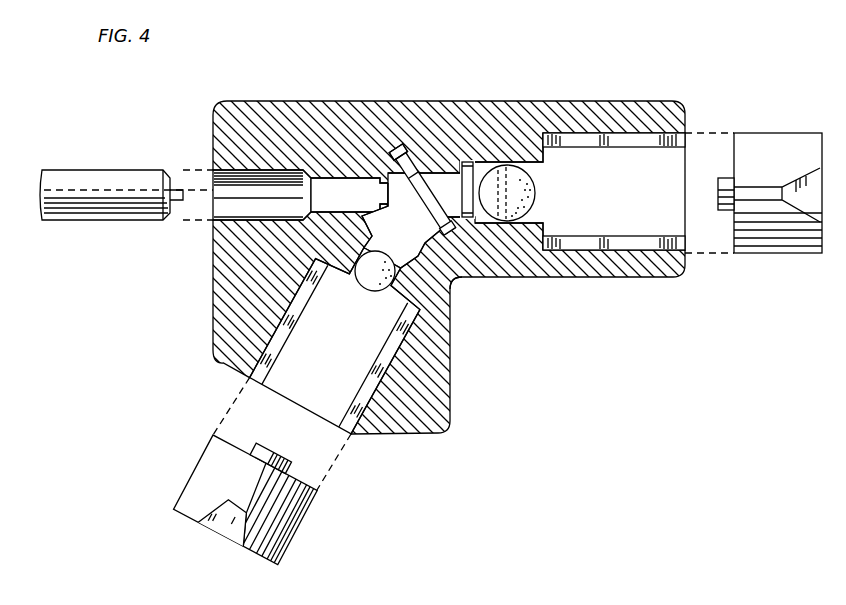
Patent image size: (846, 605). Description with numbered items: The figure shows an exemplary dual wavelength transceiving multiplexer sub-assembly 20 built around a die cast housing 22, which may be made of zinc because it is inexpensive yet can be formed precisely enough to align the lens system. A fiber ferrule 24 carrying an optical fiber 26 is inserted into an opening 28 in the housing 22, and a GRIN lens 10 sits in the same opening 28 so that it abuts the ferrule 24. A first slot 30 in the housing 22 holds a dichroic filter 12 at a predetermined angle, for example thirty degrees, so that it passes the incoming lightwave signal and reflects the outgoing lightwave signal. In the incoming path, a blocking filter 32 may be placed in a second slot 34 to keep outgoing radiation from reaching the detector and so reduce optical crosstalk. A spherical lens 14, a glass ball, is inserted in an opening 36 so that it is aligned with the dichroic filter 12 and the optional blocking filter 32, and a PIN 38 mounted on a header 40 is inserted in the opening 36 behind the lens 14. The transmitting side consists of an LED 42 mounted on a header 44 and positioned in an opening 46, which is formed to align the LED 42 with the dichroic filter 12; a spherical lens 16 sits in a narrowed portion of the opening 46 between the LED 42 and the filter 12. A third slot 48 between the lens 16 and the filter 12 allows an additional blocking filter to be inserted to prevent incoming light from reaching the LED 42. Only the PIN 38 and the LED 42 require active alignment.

The GRIN lens 10 is at (345, 182).
The dichroic filter 12 is at (414, 172).
The spherical lens 14 is at (536, 190).
The spherical lens 16 is at (362, 280).
The dual wavelength transceiving multiplexer sub-assembly 20 is at (559, 365).
The die cast housing 22 is at (630, 118).
The fiber ferrule 24 is at (96, 176).
The optical fiber 26 is at (90, 210).
The opening 28 is at (216, 178).
The first slot 30 is at (397, 152).
The blocking filter 32 is at (430, 166).
The second slot 34 is at (467, 162).
The opening 36 is at (690, 160).
The PIN 38 is at (718, 193).
The header 40 is at (772, 148).
The LED 42 is at (268, 445).
The header 44 is at (204, 478).
The opening 46 is at (318, 387).
The third slot 48 is at (450, 288).